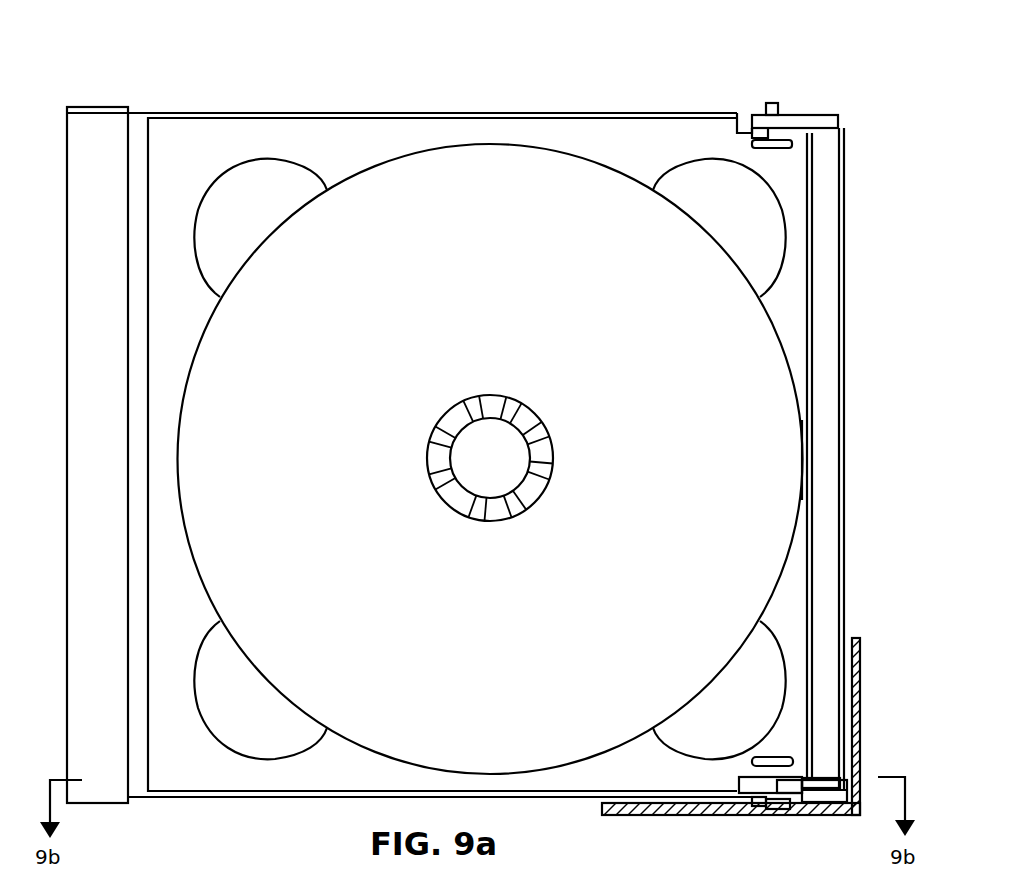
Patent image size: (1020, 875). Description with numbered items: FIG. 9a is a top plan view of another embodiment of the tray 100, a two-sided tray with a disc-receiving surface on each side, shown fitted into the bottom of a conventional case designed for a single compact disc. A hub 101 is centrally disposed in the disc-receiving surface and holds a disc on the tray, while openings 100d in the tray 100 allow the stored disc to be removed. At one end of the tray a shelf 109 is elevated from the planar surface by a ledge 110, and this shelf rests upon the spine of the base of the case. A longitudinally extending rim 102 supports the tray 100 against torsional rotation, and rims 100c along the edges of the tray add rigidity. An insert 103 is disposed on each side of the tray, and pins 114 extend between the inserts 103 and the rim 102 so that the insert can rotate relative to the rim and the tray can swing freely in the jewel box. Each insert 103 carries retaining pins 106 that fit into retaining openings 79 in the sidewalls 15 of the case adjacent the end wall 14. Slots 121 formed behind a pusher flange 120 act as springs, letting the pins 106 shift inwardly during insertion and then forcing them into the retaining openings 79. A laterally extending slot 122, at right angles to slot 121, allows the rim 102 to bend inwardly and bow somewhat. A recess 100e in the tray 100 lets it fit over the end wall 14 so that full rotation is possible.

The tray 100 is at (512, 62).
The rims 100c is at (288, 112).
The openings 100d is at (238, 156).
The recess 100e is at (815, 268).
The hub 101 is at (550, 418).
The longitudinally extending rim 102 is at (846, 470).
The insert 103 is at (816, 125).
The retaining pins 106 is at (770, 103).
The shelf 109 is at (118, 508).
The ledge 110 is at (137, 128).
The pins 114 is at (842, 128).
The pusher flange 120 is at (780, 126).
The slots 121 is at (794, 757).
The laterally extending slot 122 is at (803, 489).
The end wall 14 is at (856, 692).
The sidewalls 15 is at (676, 814).
The retaining openings 79 is at (775, 808).